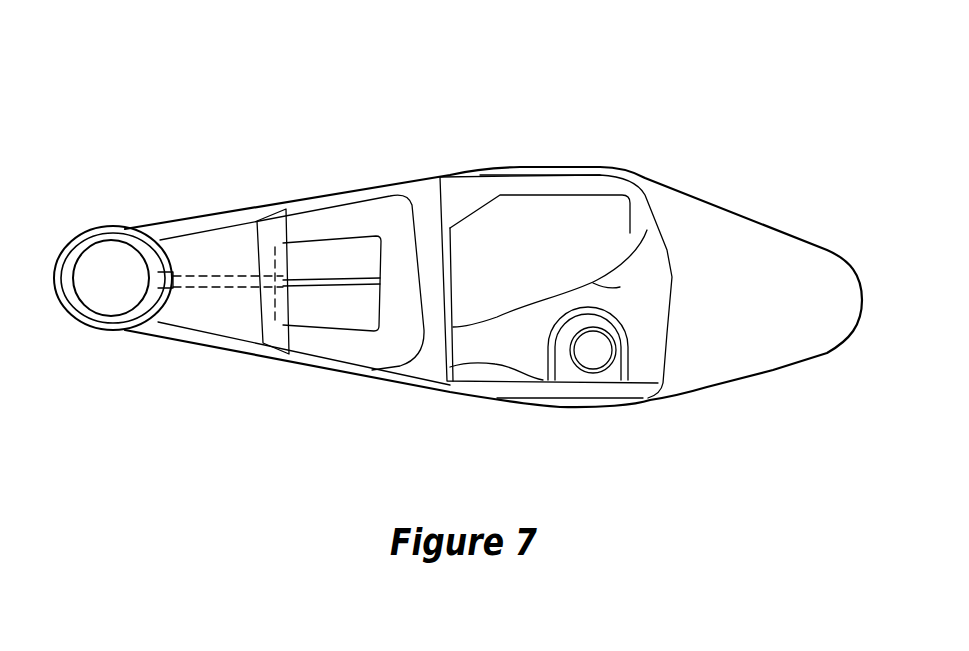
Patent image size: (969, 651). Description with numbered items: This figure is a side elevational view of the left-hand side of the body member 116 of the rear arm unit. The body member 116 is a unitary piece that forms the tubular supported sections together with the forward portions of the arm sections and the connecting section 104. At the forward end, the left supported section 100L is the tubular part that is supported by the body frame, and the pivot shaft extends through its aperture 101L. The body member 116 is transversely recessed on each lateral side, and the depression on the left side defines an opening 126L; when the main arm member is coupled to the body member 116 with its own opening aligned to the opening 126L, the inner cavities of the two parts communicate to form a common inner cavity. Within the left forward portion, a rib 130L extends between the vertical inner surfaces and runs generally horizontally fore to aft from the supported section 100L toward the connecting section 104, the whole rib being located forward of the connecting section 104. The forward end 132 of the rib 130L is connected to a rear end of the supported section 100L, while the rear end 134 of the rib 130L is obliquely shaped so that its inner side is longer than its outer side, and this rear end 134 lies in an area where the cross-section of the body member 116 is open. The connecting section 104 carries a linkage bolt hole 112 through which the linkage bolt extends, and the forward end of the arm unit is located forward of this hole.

The body member 116 is at (623, 143).
The supported section 100L is at (103, 330).
The aperture 101L is at (113, 258).
The forward end of rib 132 is at (180, 288).
The connecting section 104 is at (423, 190).
The opening 126L is at (308, 203).
The rib 130L is at (298, 276).
The rear end of rib 134 is at (382, 293).
The linkage bolt hole 112 is at (593, 360).